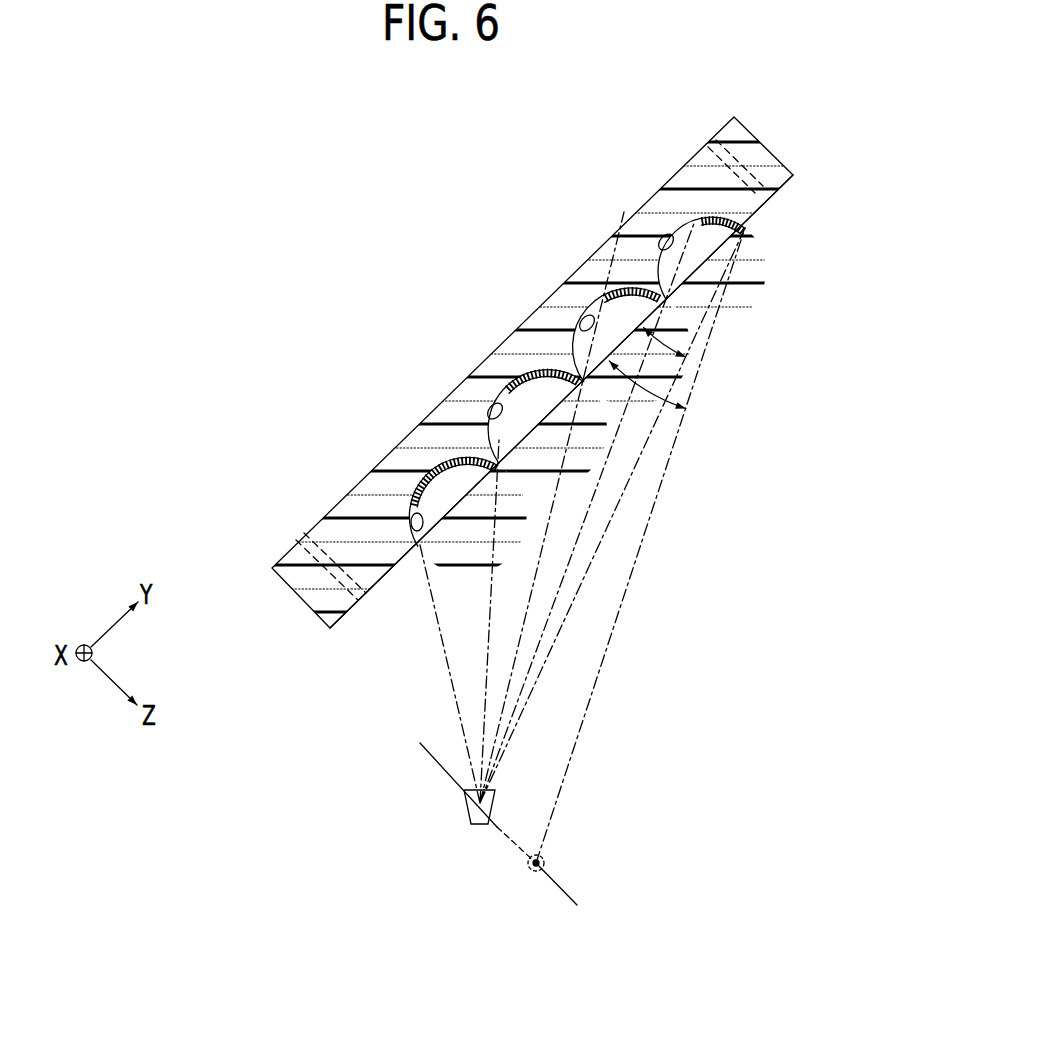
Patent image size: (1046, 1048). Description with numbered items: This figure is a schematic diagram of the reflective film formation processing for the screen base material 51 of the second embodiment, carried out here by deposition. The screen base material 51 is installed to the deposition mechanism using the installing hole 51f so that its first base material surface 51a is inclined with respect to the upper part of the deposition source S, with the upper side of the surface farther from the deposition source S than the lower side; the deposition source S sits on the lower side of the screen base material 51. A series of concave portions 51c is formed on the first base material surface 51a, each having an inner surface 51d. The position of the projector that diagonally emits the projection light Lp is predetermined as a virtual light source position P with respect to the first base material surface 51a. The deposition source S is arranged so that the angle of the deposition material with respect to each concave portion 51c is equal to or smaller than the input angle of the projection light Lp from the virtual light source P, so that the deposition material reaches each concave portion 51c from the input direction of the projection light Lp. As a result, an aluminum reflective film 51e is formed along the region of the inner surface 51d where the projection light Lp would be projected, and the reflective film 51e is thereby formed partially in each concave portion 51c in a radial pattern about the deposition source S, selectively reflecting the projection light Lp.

The screen base material 51 is at (757, 156).
The first base material surface 51a is at (752, 222).
The concave portion 51c is at (662, 238).
The inner surface 51d is at (463, 352).
The reflective film 51e is at (698, 220).
The installing hole 51f is at (300, 545).
The deposition source S is at (465, 808).
The virtual light source position P is at (546, 858).
The projection light Lp is at (616, 625).